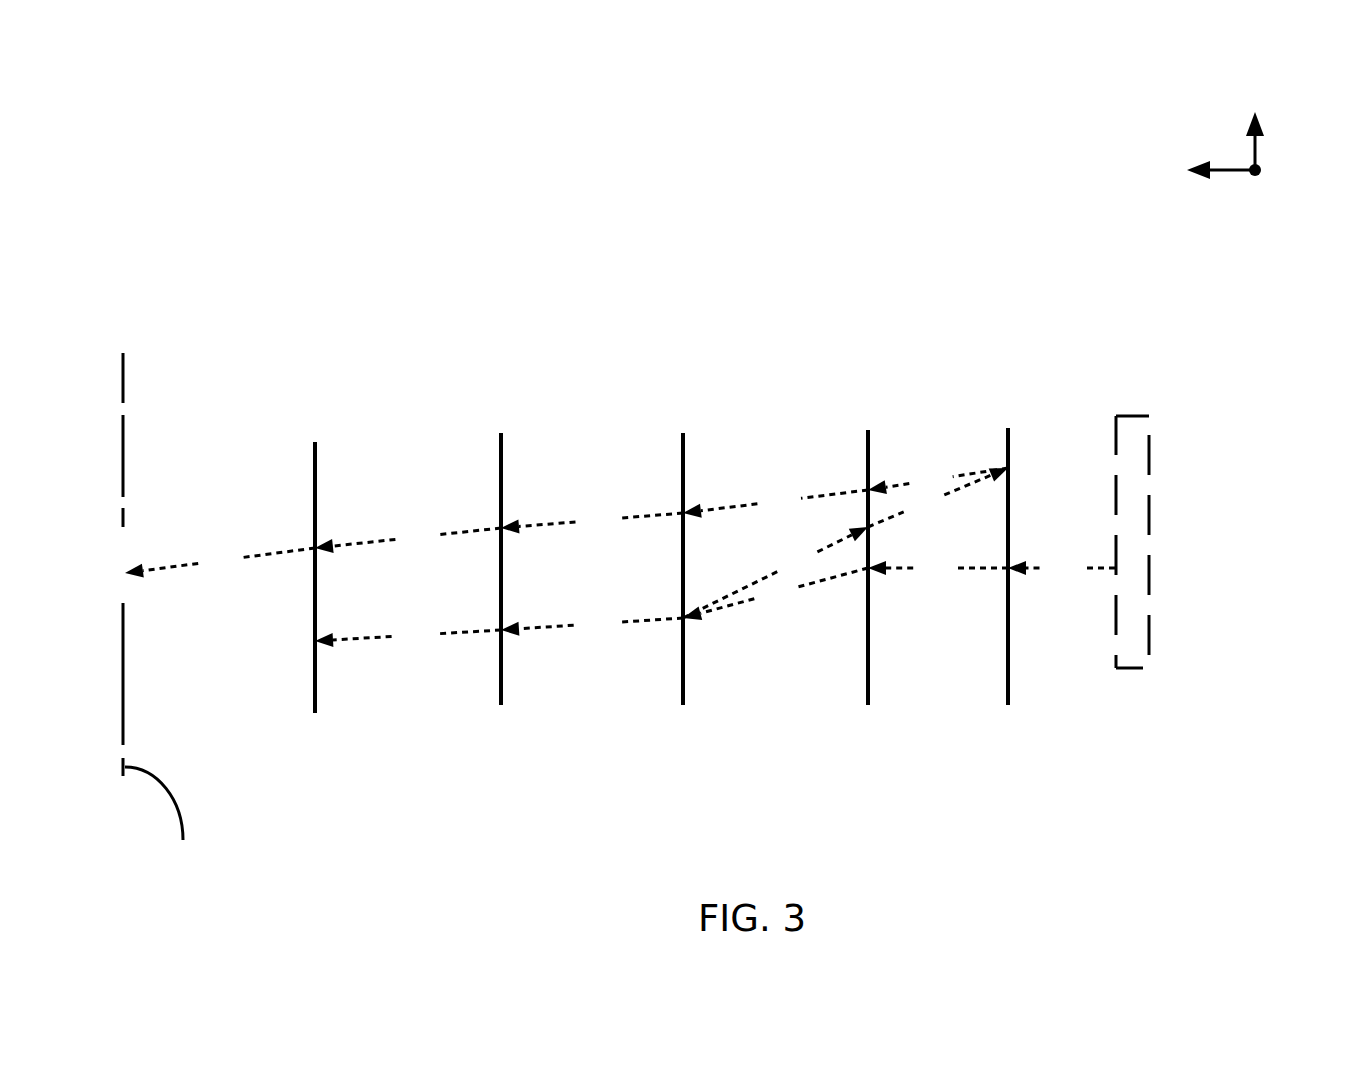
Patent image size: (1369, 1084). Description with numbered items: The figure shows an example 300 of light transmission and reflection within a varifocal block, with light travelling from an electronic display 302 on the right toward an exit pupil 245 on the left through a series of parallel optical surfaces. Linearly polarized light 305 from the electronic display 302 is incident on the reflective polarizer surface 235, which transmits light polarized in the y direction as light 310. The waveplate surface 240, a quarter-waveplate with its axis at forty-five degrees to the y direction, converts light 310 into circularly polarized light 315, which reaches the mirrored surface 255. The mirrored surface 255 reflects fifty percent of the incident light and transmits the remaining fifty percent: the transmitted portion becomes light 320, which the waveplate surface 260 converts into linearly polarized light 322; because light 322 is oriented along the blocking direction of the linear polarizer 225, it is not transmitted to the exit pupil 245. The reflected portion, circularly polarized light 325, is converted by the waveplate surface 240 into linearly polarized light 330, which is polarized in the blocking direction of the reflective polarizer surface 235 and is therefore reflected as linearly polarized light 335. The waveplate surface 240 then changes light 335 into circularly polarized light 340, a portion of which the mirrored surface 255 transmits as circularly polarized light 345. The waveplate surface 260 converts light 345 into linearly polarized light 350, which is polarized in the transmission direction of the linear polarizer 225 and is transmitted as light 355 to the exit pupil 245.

The example of light transmission and reflection 300 is at (170, 86).
The linear polarizer 225 is at (313, 465).
The waveplate surface 260 is at (500, 446).
The mirrored surface 255 is at (680, 438).
The waveplate surface 240 is at (866, 445).
The reflective polarizer surface 235 is at (1005, 430).
The electronic display 302 is at (1140, 416).
The exit pupil 245 is at (180, 628).
The linearly polarized light 305 is at (1061, 568).
The light 310 is at (938, 568).
The circularly polarized light 315 is at (775, 594).
The light 320 is at (592, 625).
The linearly polarized light 322 is at (408, 635).
The circularly polarized light 325 is at (775, 572).
The linearly polarized light 330 is at (938, 497).
The linearly polarized light 335 is at (938, 477).
The circularly polarized light 340 is at (775, 504).
The circularly polarized light 345 is at (592, 522).
The linearly polarized light 350 is at (408, 539).
The transmitted light 355 is at (220, 563).